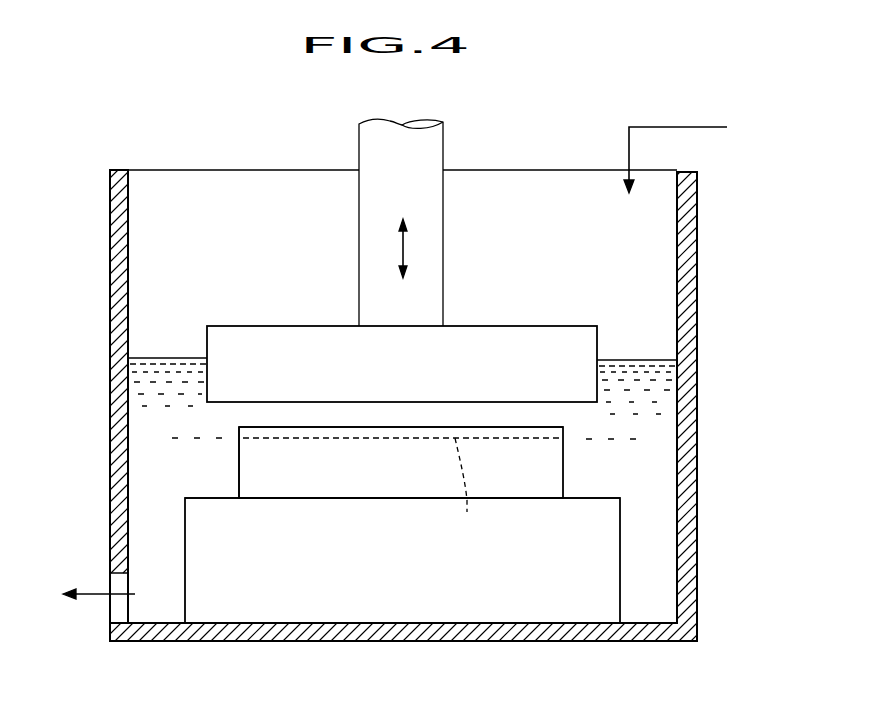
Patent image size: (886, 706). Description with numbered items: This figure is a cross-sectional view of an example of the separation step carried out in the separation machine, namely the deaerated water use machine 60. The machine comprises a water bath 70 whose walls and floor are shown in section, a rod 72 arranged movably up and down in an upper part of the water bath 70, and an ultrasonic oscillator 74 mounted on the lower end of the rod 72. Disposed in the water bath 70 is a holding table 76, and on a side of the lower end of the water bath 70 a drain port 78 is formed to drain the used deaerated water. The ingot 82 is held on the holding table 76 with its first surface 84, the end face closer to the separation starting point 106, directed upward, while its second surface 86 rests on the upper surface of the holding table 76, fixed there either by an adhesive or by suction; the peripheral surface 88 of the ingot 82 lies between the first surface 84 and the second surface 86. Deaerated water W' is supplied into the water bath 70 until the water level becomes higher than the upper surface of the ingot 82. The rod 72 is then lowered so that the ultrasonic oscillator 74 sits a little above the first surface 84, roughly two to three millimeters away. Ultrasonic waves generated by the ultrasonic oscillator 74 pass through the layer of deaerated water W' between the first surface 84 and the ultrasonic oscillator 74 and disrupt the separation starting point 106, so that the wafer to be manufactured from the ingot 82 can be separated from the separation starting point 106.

The deaerated water use machine 60 is at (202, 154).
The water bath 70 is at (697, 320).
The rod 72 is at (432, 244).
The ultrasonic oscillator 74 is at (541, 344).
The holding table 76 is at (528, 603).
The drain port 78 is at (118, 612).
The ingot 82 is at (565, 467).
The first surface 84 is at (533, 427).
The second surface 86 is at (509, 500).
The peripheral surface 88 is at (238, 473).
The separation starting point 106 is at (471, 491).
The deaerated water W is at (170, 450).